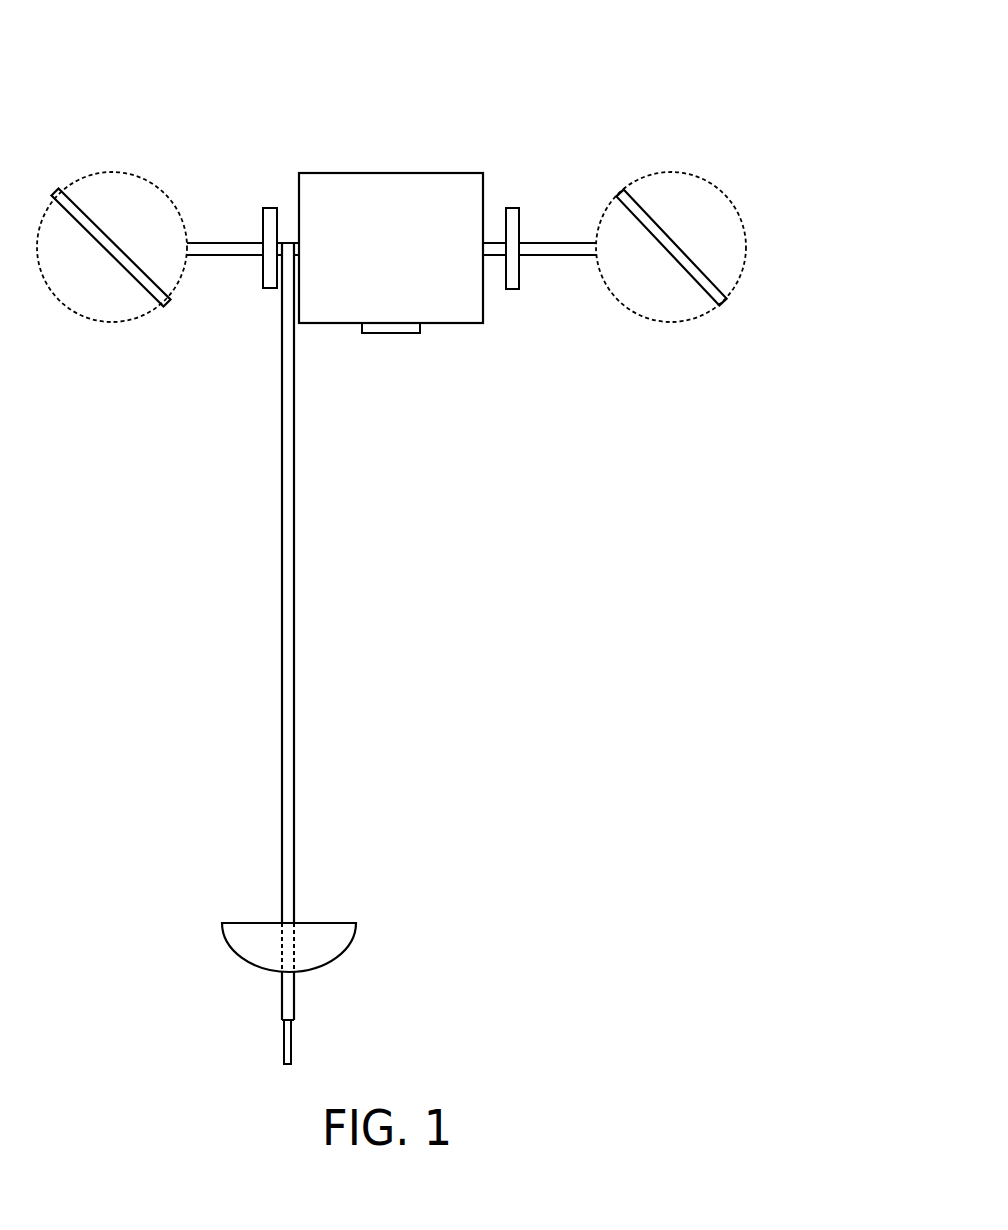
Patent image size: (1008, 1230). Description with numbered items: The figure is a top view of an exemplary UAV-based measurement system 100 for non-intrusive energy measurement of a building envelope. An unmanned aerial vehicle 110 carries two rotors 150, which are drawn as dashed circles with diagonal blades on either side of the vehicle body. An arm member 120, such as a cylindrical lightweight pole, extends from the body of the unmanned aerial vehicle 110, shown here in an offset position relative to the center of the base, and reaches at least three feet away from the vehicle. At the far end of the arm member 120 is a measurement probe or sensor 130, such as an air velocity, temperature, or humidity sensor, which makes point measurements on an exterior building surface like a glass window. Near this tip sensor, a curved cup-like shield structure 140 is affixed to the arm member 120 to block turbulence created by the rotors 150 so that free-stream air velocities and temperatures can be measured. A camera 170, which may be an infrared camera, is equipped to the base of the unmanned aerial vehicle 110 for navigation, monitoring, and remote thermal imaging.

The UAV-based measurement system 100 is at (556, 45).
The unmanned aerial vehicle 110 is at (365, 173).
The arm member 120 is at (294, 517).
The measurement probe/sensor 130 is at (293, 1035).
The shield structure 140 is at (332, 943).
The rotors 150 is at (726, 292).
The camera 170 is at (390, 333).